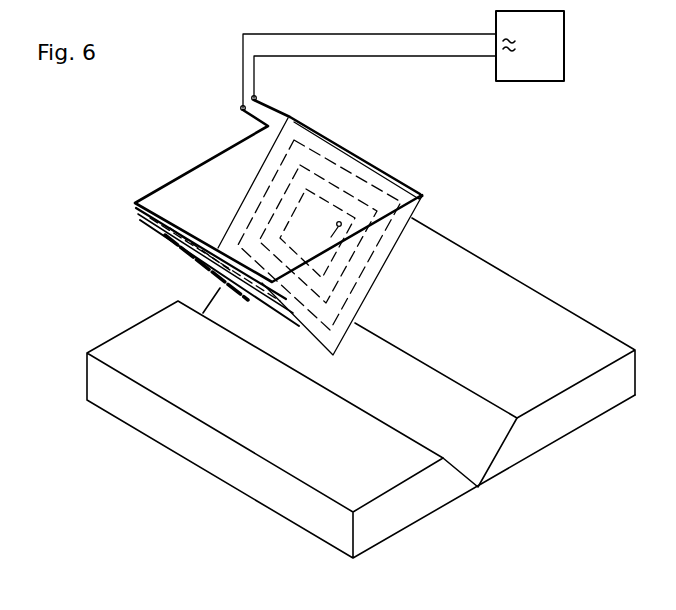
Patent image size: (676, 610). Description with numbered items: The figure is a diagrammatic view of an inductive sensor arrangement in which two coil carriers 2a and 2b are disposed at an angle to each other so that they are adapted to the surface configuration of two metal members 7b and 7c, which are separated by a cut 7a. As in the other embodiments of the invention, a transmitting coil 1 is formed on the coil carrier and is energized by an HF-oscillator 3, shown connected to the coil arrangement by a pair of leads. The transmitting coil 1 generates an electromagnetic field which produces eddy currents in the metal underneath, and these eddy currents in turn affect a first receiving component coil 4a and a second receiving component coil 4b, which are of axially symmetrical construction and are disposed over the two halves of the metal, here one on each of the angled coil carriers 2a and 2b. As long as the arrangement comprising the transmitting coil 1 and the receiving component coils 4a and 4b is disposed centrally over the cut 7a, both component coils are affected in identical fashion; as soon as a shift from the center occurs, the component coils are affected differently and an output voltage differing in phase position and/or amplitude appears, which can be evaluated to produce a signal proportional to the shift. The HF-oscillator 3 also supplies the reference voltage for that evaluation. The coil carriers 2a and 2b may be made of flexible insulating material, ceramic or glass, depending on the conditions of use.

The transmitting coil 1 is at (193, 168).
The coil carrier 2a is at (160, 220).
The coil carrier 2b is at (258, 197).
The HF-oscillator 3 is at (402, 60).
The first receiving component coil 4a is at (188, 255).
The second receiving component coil 4b is at (367, 263).
The cut 7a is at (481, 488).
The metal member 7b is at (361, 429).
The metal member 7c is at (419, 318).